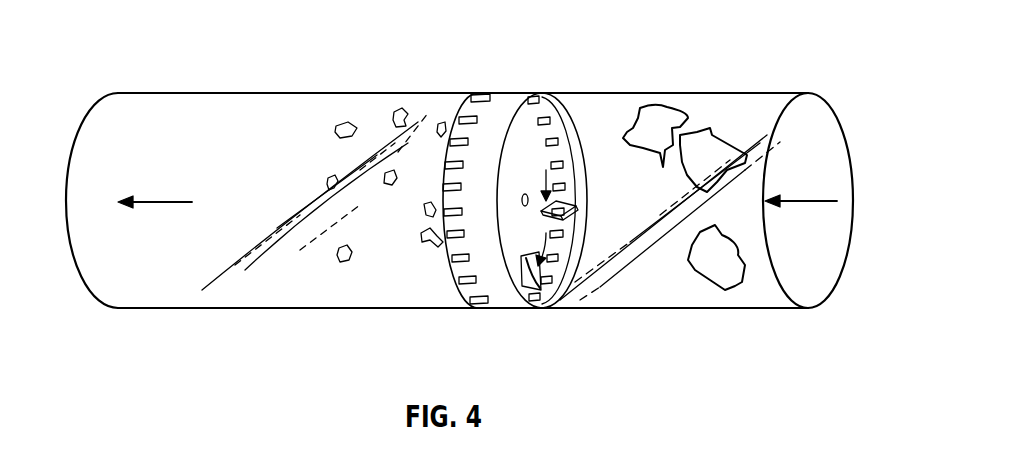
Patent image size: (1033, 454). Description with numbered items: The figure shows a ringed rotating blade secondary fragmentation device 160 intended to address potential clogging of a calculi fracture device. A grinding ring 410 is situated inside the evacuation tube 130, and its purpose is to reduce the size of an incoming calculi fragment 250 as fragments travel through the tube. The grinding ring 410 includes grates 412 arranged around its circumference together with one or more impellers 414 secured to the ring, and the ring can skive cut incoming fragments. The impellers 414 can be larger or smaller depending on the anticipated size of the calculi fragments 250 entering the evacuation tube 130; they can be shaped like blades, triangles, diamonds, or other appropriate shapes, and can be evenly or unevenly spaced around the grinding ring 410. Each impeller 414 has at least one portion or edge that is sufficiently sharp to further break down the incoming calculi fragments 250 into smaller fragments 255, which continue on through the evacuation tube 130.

The evacuation tube 130 is at (245, 92).
The ringed rotating blade secondary fragmentation device 160 is at (784, 33).
The calculi fragment 250 is at (710, 130).
The smaller fragments 255 is at (333, 180).
The grinding ring 410 is at (506, 96).
The grates 412 is at (460, 302).
The impellers 414 is at (577, 211).